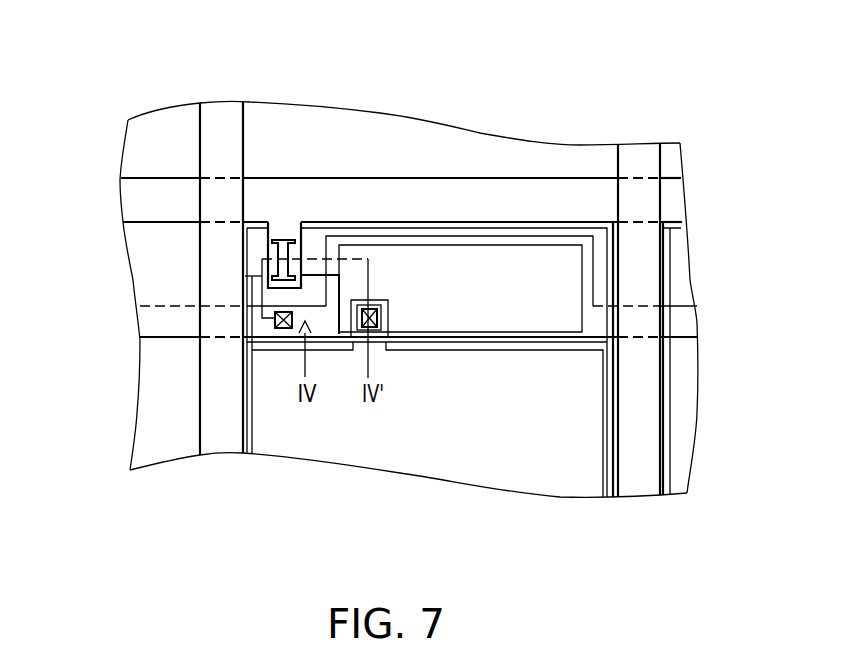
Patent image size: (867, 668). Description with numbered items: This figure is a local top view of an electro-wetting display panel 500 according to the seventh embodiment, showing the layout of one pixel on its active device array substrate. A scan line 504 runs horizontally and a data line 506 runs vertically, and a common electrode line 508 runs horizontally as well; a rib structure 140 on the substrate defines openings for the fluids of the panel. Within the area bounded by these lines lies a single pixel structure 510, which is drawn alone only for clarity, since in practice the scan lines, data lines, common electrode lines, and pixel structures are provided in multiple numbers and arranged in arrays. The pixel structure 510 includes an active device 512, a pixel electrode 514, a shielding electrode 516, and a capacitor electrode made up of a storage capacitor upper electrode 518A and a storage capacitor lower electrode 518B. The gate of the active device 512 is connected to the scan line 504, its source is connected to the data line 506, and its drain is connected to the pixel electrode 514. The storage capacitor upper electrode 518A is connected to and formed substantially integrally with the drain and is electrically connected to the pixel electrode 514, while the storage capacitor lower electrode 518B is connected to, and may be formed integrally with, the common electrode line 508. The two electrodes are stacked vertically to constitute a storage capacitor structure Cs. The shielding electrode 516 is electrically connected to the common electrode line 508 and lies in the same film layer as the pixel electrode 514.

The electro-wetting display panel 500 is at (728, 558).
The scan line 504 is at (520, 181).
The data line 506 is at (242, 160).
The common electrode line 508 is at (238, 306).
The rib structure 140 is at (615, 391).
The pixel structure 510 is at (488, 33).
The active device 512 is at (283, 239).
The pixel electrode 514 is at (402, 332).
The shielding electrode 516 is at (320, 222).
The storage capacitor structure Cs is at (459, 185).
The storage capacitor upper electrode 518A is at (430, 247).
The storage capacitor lower electrode 518B is at (480, 237).